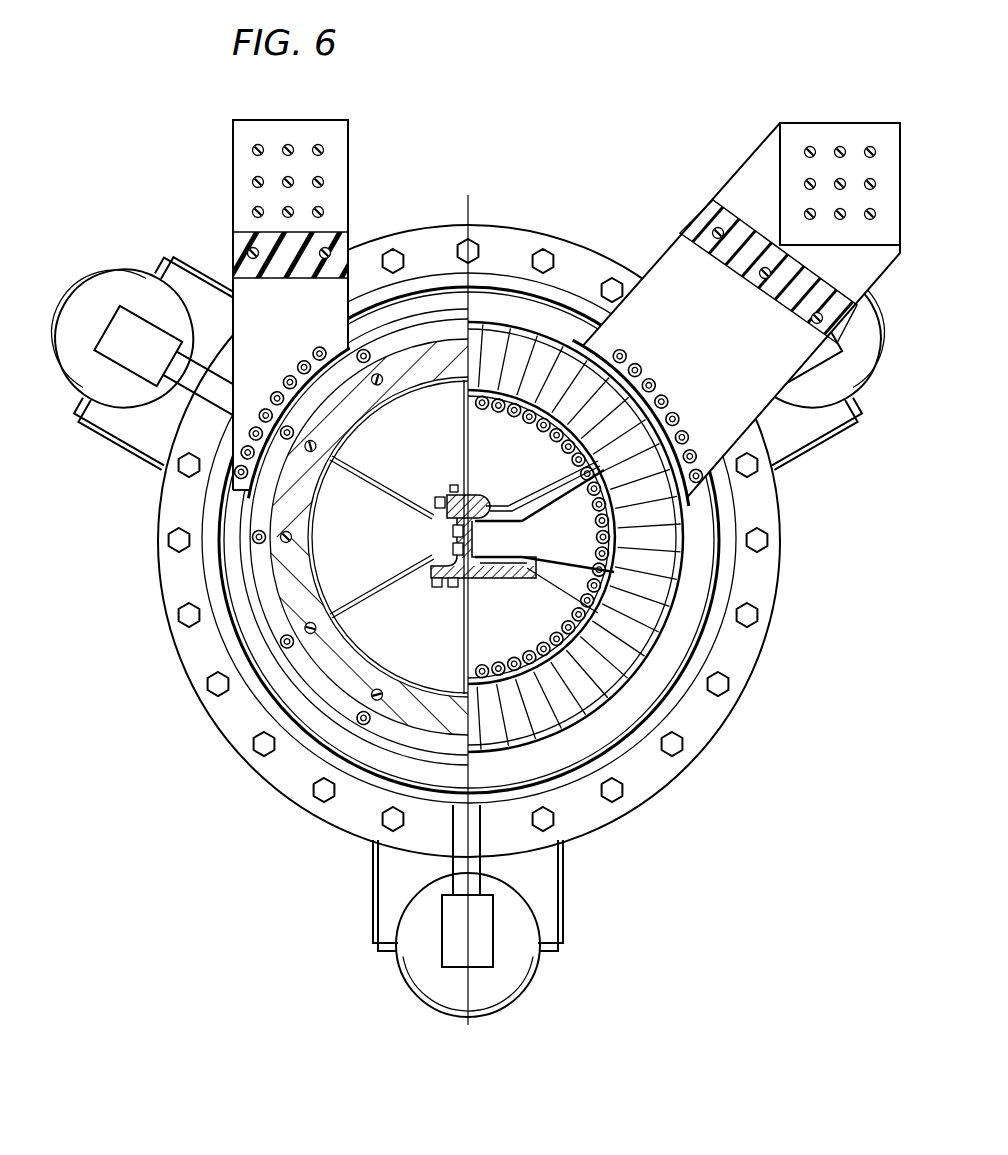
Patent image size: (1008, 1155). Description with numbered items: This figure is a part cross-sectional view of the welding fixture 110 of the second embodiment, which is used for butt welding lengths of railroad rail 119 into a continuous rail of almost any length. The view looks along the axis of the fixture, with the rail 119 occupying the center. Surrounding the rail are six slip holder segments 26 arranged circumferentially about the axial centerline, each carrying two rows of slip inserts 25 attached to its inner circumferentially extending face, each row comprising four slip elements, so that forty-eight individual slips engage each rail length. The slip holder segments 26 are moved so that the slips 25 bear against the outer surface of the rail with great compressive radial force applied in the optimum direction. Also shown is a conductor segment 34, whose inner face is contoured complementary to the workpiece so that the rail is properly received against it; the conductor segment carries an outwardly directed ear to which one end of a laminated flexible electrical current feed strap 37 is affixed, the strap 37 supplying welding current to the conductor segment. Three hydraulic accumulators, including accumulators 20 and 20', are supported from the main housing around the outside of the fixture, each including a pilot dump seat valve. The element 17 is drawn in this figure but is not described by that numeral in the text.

The welding fixture 110 is at (150, 164).
The laminated plate pack 17 is at (872, 275).
The hydraulic accumulator 20 is at (481, 911).
The hydraulic accumulator 20' is at (785, 353).
The slips 25 is at (452, 481).
The slip holder segment 26 is at (400, 436).
The conductor segment 34 is at (583, 549).
The laminated flexible electrical current feed strap 37 is at (668, 568).
The railroad rail 119 is at (484, 497).